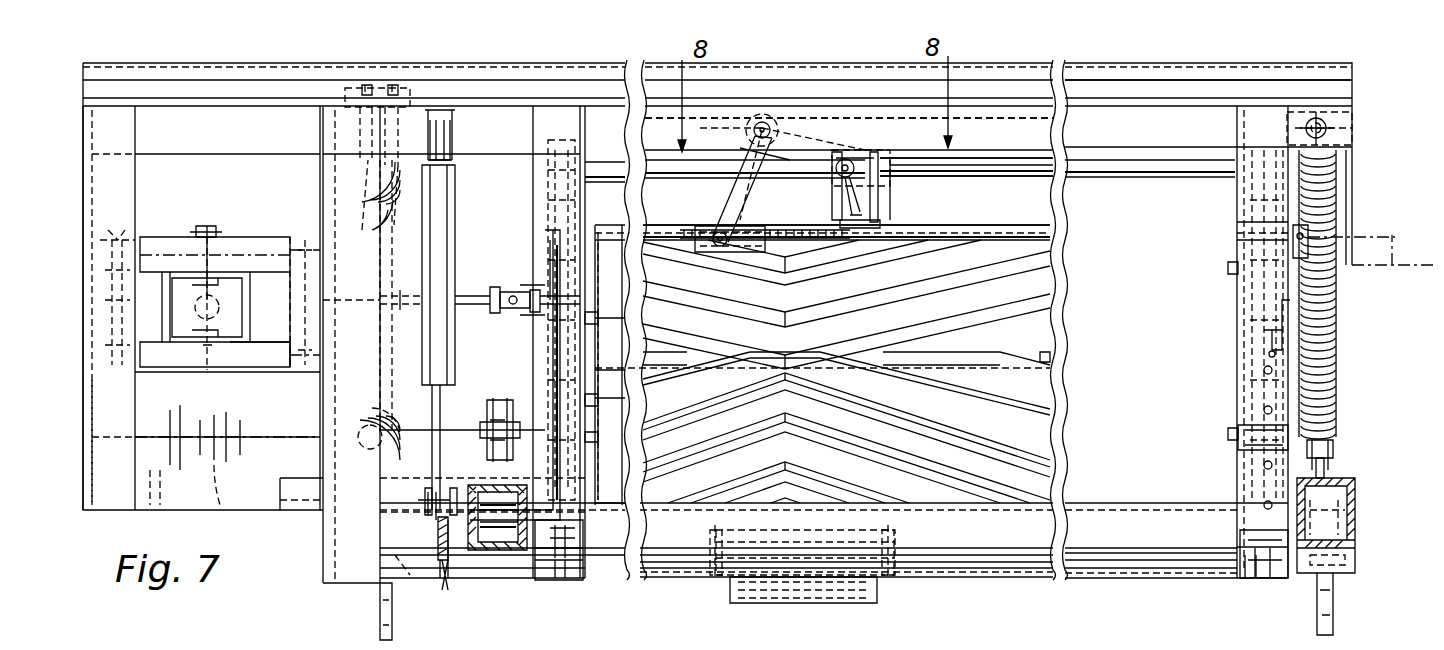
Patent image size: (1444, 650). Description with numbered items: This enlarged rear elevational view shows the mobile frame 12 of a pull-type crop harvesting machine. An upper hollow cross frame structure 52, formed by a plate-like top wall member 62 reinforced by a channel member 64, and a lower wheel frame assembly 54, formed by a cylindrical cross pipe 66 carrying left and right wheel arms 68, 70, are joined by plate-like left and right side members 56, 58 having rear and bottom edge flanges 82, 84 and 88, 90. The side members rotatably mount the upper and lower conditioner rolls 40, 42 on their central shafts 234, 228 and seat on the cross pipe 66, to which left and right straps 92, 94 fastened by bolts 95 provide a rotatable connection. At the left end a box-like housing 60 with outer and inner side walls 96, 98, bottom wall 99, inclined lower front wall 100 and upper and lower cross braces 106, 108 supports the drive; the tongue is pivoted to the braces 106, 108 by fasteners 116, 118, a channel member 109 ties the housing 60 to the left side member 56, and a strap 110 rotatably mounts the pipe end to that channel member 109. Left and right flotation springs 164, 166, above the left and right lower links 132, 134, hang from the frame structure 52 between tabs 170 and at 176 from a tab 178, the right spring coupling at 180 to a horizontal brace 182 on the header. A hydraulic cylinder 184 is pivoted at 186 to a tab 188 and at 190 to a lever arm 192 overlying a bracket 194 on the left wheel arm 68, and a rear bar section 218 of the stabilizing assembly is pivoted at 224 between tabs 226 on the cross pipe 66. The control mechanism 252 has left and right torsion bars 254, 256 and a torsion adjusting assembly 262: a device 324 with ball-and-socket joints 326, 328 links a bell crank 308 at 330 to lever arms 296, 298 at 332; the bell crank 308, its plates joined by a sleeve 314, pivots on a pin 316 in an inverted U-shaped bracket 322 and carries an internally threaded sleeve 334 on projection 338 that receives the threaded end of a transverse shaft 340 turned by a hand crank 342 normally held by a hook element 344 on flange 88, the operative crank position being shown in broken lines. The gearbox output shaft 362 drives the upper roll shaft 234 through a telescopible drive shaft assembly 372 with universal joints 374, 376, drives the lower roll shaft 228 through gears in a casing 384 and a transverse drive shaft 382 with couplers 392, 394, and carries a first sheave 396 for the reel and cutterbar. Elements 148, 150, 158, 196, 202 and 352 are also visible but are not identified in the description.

The mobile frame 12 is at (1327, 65).
The upper conditioner roll 40 is at (846, 304).
The lower conditioner roll 42 is at (822, 427).
The upper hollow cross frame structure 52 is at (824, 62).
The lower wheel frame assembly 54 is at (702, 584).
The left side member 56 is at (589, 202).
The right side member 58 is at (1232, 204).
The box-like housing 60 is at (98, 512).
The top wall member 62 is at (1102, 80).
The channel member 64 is at (1172, 147).
The cylindrical cross pipe 66 is at (1110, 578).
The left wheel arm 68 is at (504, 550).
The right wheel arm 70 is at (1355, 534).
The rear edge flange 82 is at (546, 178).
The bottom edge flange 84 is at (584, 536).
The rear edge flange 88 is at (1337, 180).
The bottom edge flange 90 is at (1237, 538).
The left rigid strap 92 is at (566, 578).
The right rigid strap 94 is at (1245, 578).
The bolts 95 is at (564, 578).
The outer vertical side wall 96 is at (94, 412).
The inner vertical side wall 98 is at (330, 386).
The bottom wall 99 is at (280, 510).
The lower front wall 100 is at (261, 437).
The upper horizontal cross brace 106 is at (246, 237).
The lower horizontal cross brace 108 is at (248, 368).
The channel member 109 is at (305, 478).
The rigid strap 110 is at (323, 576).
The fastener 116 is at (204, 227).
The fastener 118 is at (200, 366).
The left lower link 132 is at (378, 604).
The right lower link 134 is at (1333, 611).
The hatched link 148 is at (426, 538).
The link pivot 150 is at (402, 578).
The bracket insert 158 is at (1340, 520).
The left flotation spring 164 is at (410, 448).
The right flotation spring 166 is at (1334, 371).
The tabs 170 is at (363, 88).
The rear end coupling of right flotation spring 176 is at (1341, 112).
The tab 178 is at (1345, 133).
The forward end coupling of right flotation spring 180 is at (1335, 453).
The horizontal brace 182 is at (1332, 470).
The hydraulic cylinder 184 is at (455, 237).
The pivotal connection of cylinder anchor end 186 is at (452, 138).
The tab 188 is at (444, 114).
The pivotal connection of piston rod end 190 is at (450, 562).
The lever arm 192 is at (425, 496).
The bracket 194 is at (450, 590).
The lower panel hinge 196 is at (620, 441).
The control rod 202 is at (546, 338).
The rear bar section 218 is at (877, 590).
The pivotal connection of rear bar section 224 is at (896, 549).
The forwardly projecting tabs 226 is at (710, 531).
The central shaft of lower conditioner roll 228 is at (600, 402).
The central shaft of upper conditioner roll 234 is at (598, 321).
The control mechanism 252 is at (970, 146).
The left torsion bar 254 is at (651, 182).
The right torsion bar 256 is at (1127, 178).
The torsion adjusting assembly 262 is at (820, 255).
The left lever arm 296 is at (758, 186).
The right lever arm 298 is at (903, 198).
The bell crank 308 is at (714, 212).
The transverse sleeve 314 is at (722, 192).
The pin 316 is at (759, 122).
The inverted U-shaped bracket 322 is at (886, 132).
The device 324 is at (893, 188).
The ball-and-socket joint assembly 326 is at (833, 154).
The ball-and-socket joint assembly 328 is at (878, 215).
The pivotal connection at bell crank upper end 330 is at (851, 150).
The pivotal connection at lever arm rear ends 332 is at (835, 208).
The internally threaded sleeve 334 is at (702, 254).
The projection 338 is at (733, 255).
The transversely extending shaft 340 is at (1000, 240).
The hand actuated crank 342 is at (1408, 260).
The hook element 344 is at (1308, 331).
The bracket side plate 352 is at (258, 360).
The gearbox output shaft 362 is at (328, 276).
The telescopible drive shaft assembly 372 is at (470, 312).
The left end universal joint 374 is at (328, 328).
The right end universal joint 376 is at (522, 284).
The transverse drive shaft 382 is at (455, 412).
The casing 384 is at (153, 510).
The coupler 392 is at (220, 505).
The coupler 394 is at (496, 455).
The first sheave 396 is at (124, 242).